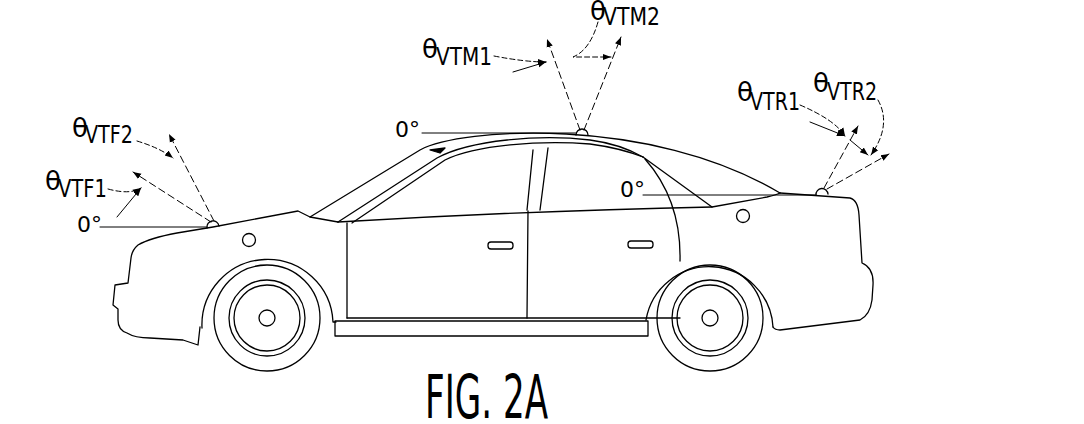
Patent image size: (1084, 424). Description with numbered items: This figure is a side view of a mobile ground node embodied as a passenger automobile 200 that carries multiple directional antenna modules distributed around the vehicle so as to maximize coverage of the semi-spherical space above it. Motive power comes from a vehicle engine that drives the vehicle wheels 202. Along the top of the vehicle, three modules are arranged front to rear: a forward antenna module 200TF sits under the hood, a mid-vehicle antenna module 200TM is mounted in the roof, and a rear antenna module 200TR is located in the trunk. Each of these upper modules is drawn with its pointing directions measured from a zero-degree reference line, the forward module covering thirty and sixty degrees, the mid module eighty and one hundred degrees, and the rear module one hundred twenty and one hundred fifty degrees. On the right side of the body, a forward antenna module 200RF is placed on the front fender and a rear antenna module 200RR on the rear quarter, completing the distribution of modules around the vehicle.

The automobile 200 is at (125, 316).
The vehicle wheels 202 is at (250, 362).
The forward right-side antenna module 200RF is at (242, 240).
The rear right-side antenna module 200RR is at (745, 223).
The forward antenna module 200TF is at (215, 222).
The mid-vehicle antenna module 200TM is at (592, 132).
The rear antenna module 200TR is at (815, 192).